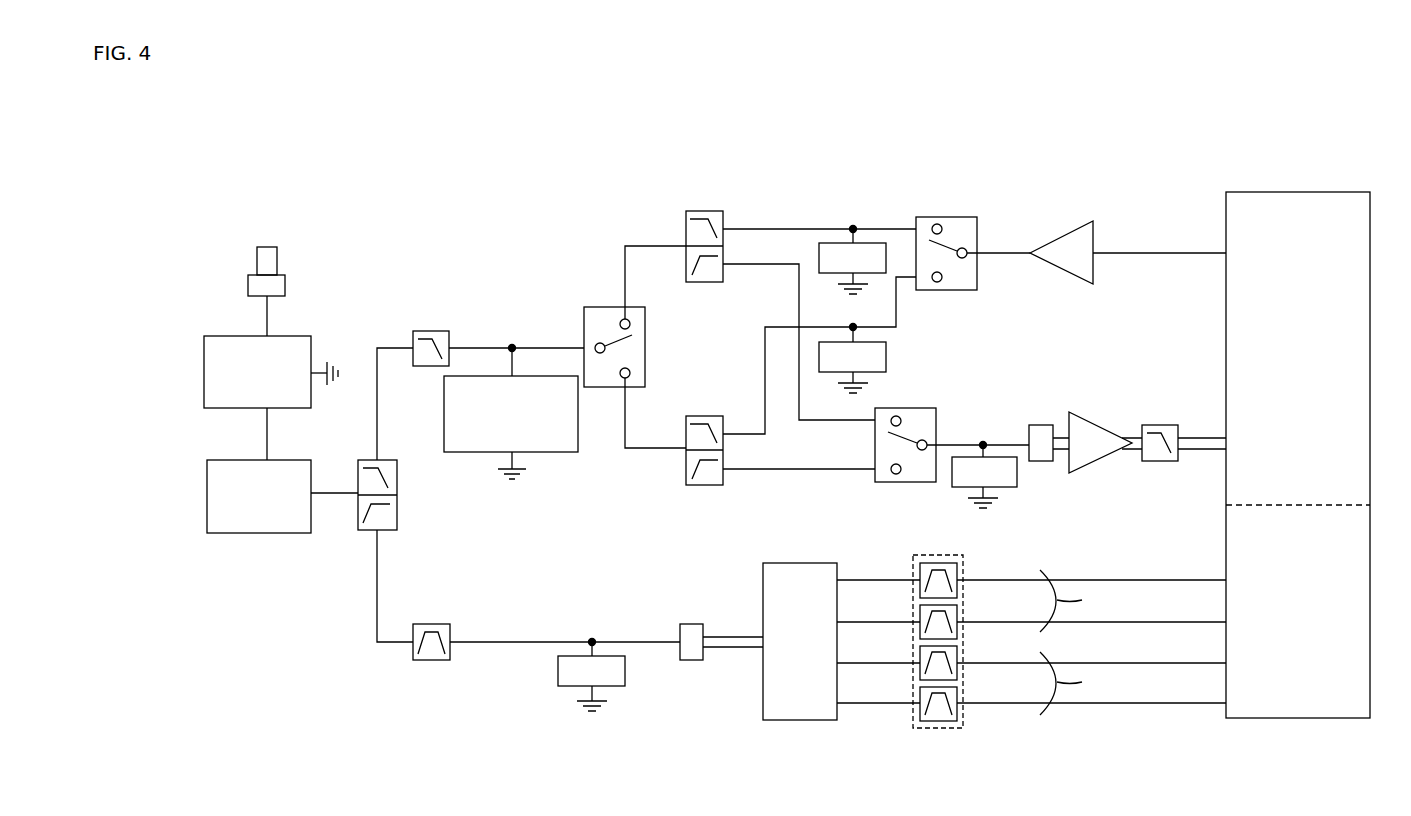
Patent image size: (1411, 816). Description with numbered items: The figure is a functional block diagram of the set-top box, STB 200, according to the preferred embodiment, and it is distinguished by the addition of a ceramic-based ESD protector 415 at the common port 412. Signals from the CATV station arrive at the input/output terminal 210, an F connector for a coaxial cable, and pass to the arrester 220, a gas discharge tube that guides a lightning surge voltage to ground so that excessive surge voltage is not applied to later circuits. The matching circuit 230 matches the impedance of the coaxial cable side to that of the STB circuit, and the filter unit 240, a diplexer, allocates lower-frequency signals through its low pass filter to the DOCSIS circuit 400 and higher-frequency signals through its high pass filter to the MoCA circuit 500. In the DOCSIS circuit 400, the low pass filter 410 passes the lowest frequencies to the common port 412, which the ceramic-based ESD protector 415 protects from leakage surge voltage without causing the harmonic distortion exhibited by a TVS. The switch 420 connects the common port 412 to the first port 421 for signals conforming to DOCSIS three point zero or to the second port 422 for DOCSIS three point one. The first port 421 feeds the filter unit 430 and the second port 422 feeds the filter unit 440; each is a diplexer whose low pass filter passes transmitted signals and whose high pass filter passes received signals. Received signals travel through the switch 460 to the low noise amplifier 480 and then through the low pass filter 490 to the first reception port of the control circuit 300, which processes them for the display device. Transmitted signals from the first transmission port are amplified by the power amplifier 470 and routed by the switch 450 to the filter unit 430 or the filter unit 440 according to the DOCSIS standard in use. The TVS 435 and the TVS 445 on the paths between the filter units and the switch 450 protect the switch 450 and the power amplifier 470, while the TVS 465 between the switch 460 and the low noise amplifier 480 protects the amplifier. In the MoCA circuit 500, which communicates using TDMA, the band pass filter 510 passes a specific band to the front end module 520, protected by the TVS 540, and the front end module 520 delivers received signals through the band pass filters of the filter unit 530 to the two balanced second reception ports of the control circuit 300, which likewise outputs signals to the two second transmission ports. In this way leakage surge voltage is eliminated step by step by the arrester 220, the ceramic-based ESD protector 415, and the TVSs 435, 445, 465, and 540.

The STB 200 is at (1306, 136).
The input/output terminal 210 is at (267, 247).
The arrester 220 is at (288, 336).
The matching circuit 230 is at (288, 460).
The filter unit 240 is at (385, 460).
The control circuit 300 is at (1325, 192).
The DOCSIS circuit 400 is at (806, 349).
The low pass filter 410 is at (428, 331).
The common port 412 is at (538, 347).
The ceramic-based ESD protector 415 is at (538, 452).
The switch 420 is at (650, 348).
The first port 421 is at (637, 243).
The second port 422 is at (637, 453).
The filter unit 430 is at (702, 211).
The TVS 435 is at (873, 242).
The filter unit 440 is at (702, 416).
The TVS 445 is at (887, 353).
The switch 450 is at (955, 217).
The switch 460 is at (917, 408).
The TVS 465 is at (1005, 488).
The power amplifier 470 is at (1060, 233).
The low noise amplifier 480 is at (1101, 420).
The low pass filter 490 is at (1158, 425).
The MoCA circuit 500 is at (802, 630).
The band pass filter 510 is at (428, 624).
The front end module 520 is at (803, 563).
The filter unit 530 is at (942, 555).
The TVS 540 is at (613, 686).